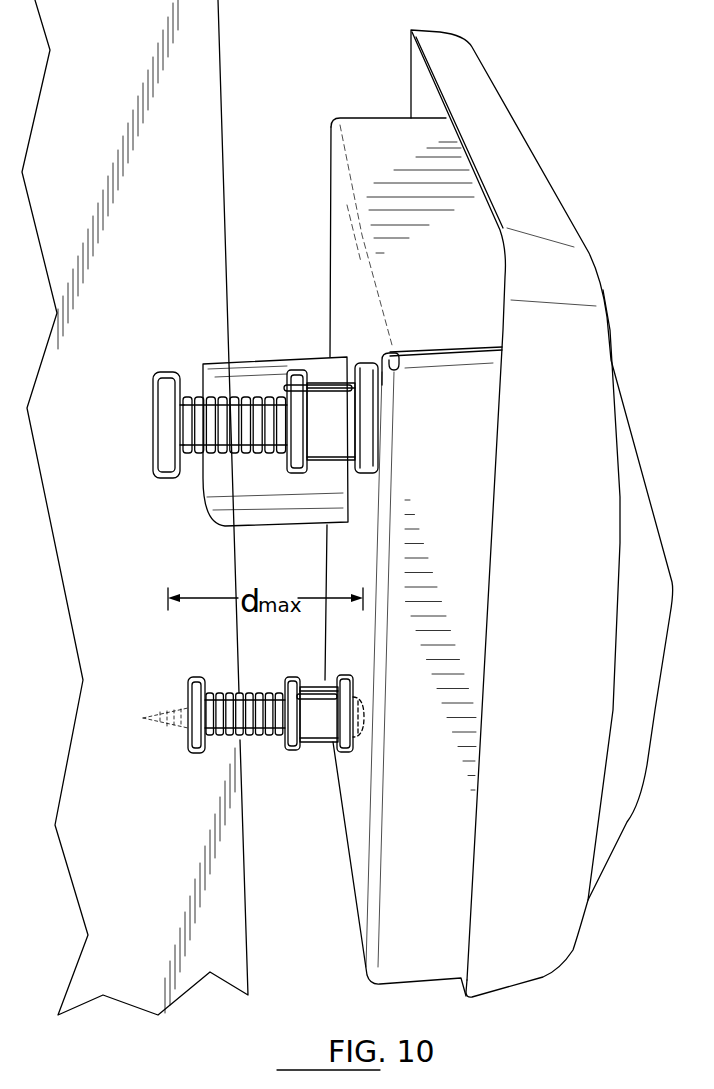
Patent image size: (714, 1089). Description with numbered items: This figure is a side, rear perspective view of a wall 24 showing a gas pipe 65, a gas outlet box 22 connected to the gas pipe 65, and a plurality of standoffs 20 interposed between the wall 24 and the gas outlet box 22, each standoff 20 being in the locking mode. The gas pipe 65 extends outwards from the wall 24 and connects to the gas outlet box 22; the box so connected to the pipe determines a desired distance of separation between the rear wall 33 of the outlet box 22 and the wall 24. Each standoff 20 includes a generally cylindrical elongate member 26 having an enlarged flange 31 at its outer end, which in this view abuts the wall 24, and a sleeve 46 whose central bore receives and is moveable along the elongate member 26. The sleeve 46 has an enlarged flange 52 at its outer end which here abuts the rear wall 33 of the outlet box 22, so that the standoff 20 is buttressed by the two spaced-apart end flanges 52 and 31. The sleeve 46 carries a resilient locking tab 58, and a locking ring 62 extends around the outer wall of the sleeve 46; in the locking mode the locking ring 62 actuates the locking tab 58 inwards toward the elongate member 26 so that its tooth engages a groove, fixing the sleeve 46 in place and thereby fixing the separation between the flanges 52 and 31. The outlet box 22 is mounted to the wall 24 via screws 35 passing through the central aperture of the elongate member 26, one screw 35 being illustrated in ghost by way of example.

The adjustable standoff 20 is at (172, 338).
The gas outlet box 22 is at (361, 112).
The wall 24 is at (162, 212).
The elongate member 26 is at (140, 468).
The flange 31 is at (163, 374).
The rear wall 33 is at (338, 324).
The screw 35 is at (363, 697).
The sleeve 46 is at (364, 362).
The flange 52 is at (372, 437).
The locking tab 58 is at (320, 384).
The locking ring 62 is at (297, 369).
The gas pipe 65 is at (248, 362).